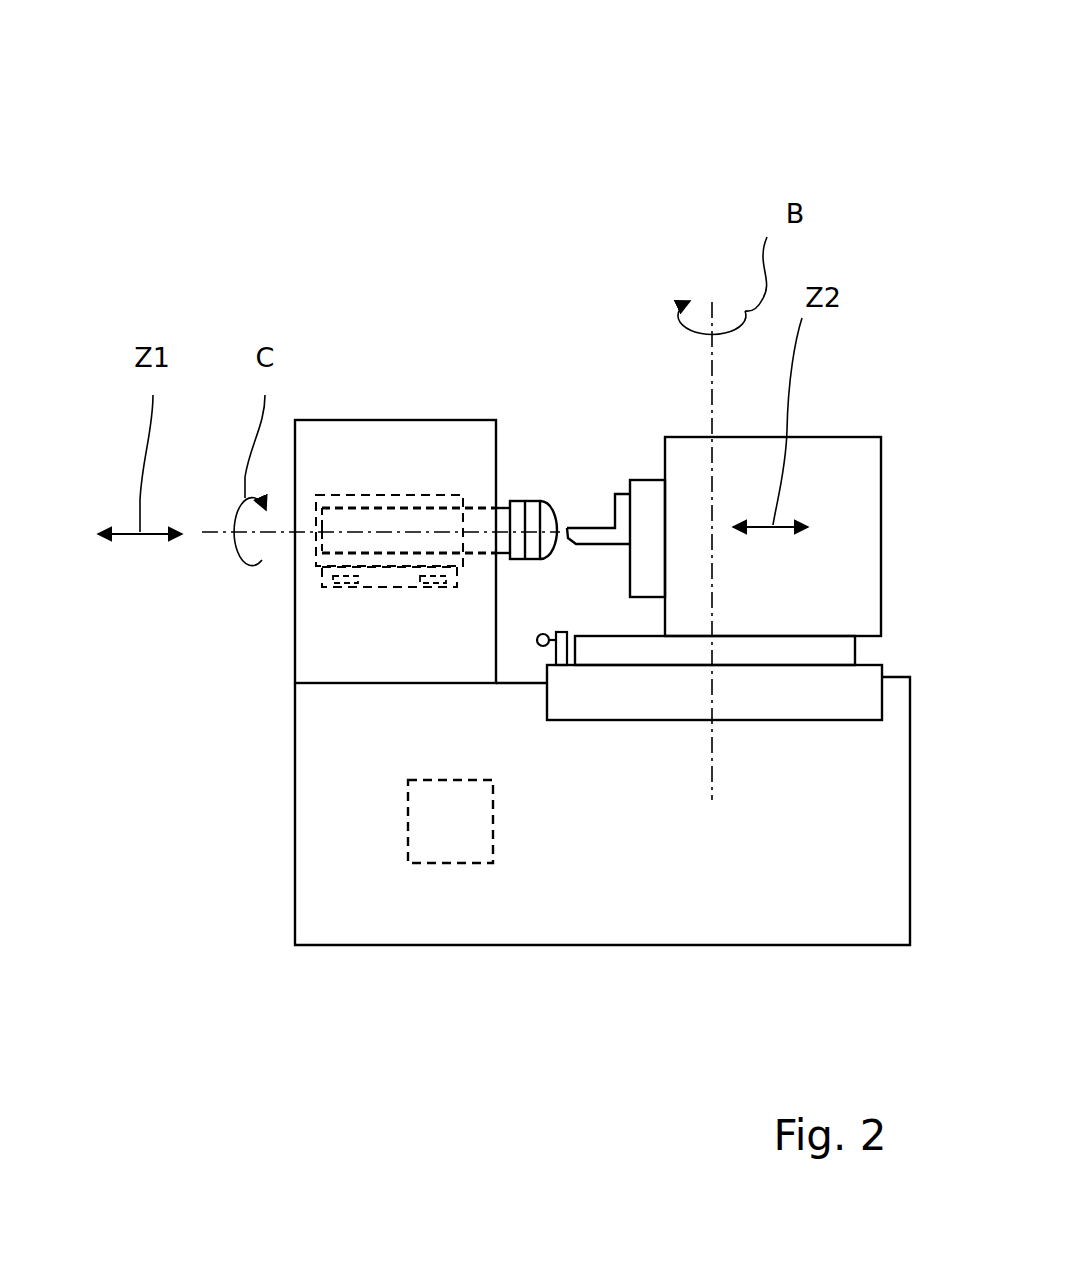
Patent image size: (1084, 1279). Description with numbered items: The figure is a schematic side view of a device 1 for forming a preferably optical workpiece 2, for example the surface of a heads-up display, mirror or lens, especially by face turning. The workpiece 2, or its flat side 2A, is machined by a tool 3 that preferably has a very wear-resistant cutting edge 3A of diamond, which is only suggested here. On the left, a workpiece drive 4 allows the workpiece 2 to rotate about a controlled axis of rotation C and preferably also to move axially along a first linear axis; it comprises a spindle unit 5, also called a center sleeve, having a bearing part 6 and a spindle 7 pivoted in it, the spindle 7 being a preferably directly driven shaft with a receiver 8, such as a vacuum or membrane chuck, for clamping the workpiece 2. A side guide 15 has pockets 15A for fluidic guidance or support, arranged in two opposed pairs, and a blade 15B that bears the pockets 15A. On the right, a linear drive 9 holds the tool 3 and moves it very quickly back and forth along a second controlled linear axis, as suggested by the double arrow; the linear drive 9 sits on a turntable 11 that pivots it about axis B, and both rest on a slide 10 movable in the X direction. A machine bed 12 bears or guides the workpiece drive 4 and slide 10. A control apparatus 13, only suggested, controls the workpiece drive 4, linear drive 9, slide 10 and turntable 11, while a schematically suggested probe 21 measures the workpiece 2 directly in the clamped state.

The device 1 is at (356, 152).
The workpiece 2 is at (541, 501).
The flat side 2A is at (559, 502).
The tool 3 is at (601, 538).
The cutting edge 3A is at (567, 527).
The workpiece drive 4 is at (342, 656).
The spindle unit 5 is at (347, 486).
The bearing part 6 is at (392, 496).
The spindle 7 is at (480, 512).
The receiver 8 is at (517, 501).
The linear drive 9 is at (867, 486).
The slide 10 is at (576, 702).
The turntable 11 is at (652, 653).
The machine bed 12 is at (347, 893).
The control apparatus 13 is at (440, 863).
The side guide 15 is at (312, 581).
The pockets 15A is at (425, 588).
The blade 15B is at (438, 590).
The probe 21 is at (540, 648).